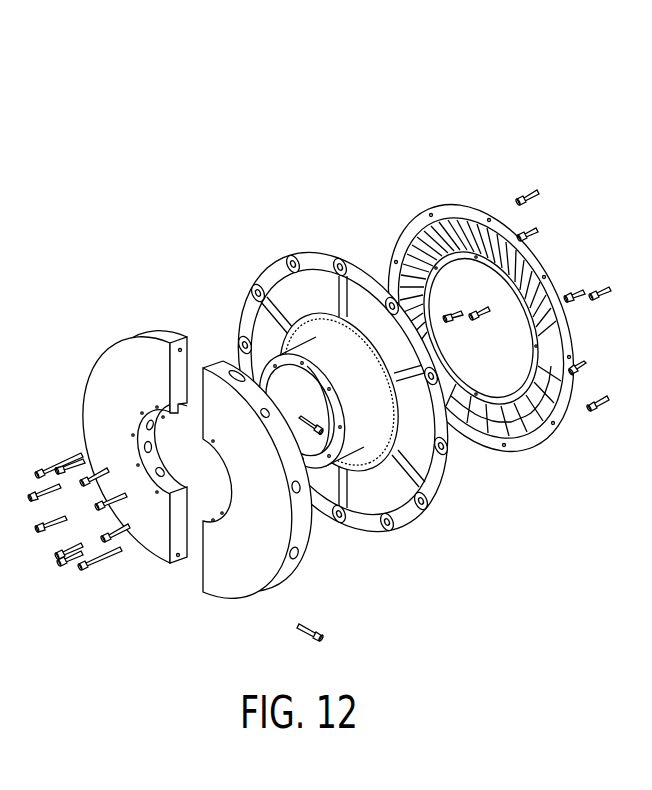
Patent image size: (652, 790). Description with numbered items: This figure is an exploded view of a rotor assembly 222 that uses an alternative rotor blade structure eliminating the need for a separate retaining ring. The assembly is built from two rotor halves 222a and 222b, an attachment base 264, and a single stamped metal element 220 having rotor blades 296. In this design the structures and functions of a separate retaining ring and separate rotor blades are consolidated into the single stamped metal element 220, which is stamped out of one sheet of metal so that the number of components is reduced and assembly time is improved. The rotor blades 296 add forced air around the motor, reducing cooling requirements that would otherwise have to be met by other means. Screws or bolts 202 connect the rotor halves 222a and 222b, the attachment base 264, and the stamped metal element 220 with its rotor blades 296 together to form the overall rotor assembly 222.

The screws or bolts 202 is at (537, 185).
The single stamped metal element 220 is at (442, 200).
The rotor assembly 222 is at (91, 140).
The rotor half 222a is at (297, 570).
The rotor half 222b is at (102, 348).
The attachment base 264 is at (430, 473).
The rotor blades 296 is at (513, 430).